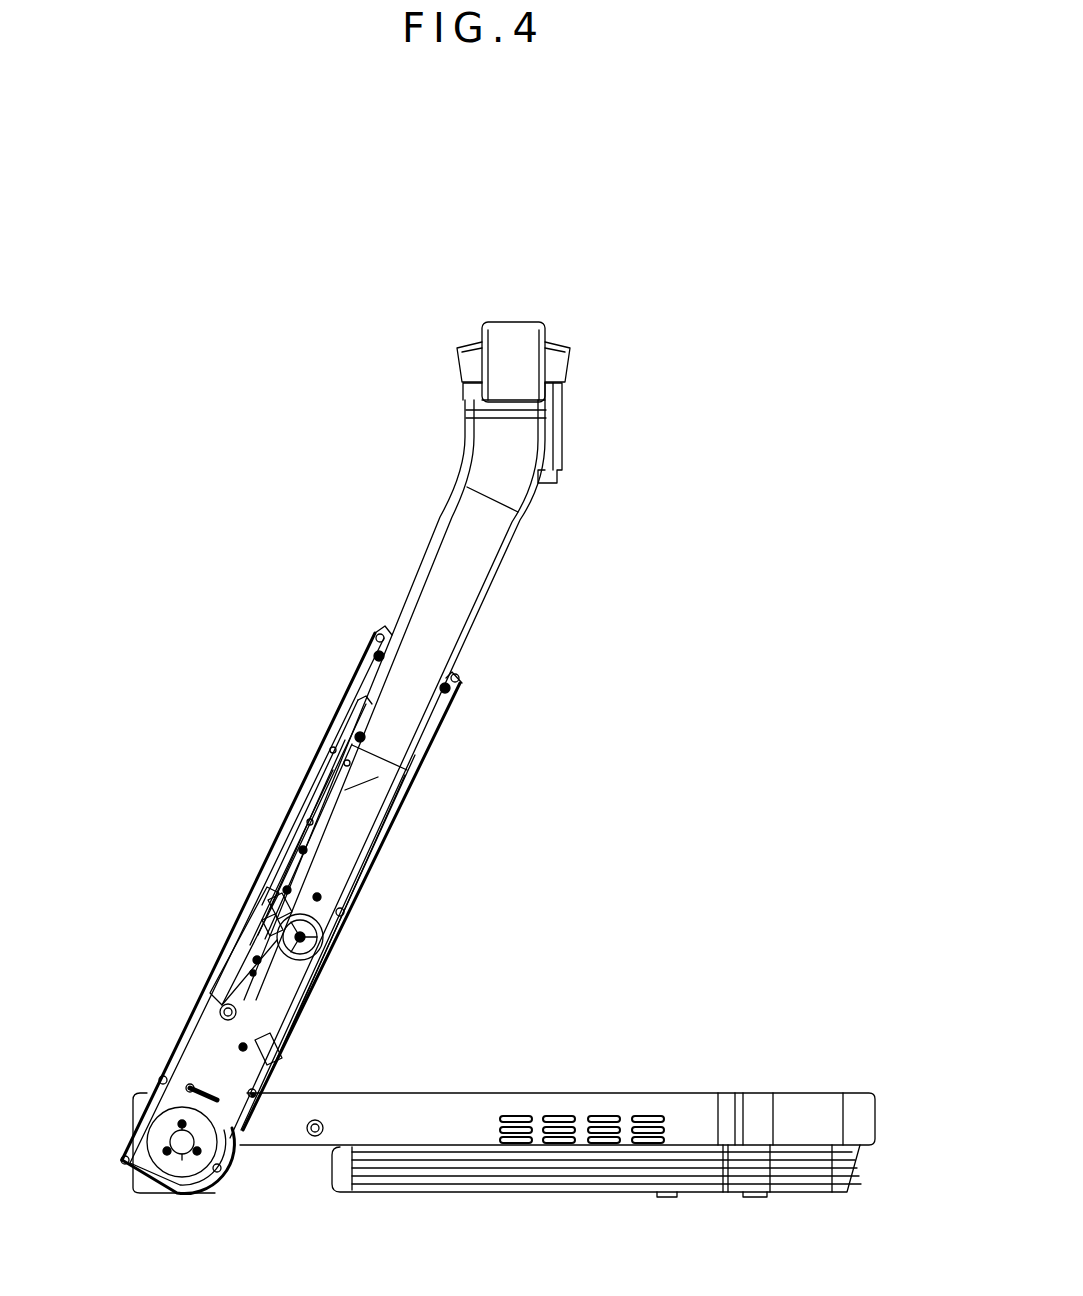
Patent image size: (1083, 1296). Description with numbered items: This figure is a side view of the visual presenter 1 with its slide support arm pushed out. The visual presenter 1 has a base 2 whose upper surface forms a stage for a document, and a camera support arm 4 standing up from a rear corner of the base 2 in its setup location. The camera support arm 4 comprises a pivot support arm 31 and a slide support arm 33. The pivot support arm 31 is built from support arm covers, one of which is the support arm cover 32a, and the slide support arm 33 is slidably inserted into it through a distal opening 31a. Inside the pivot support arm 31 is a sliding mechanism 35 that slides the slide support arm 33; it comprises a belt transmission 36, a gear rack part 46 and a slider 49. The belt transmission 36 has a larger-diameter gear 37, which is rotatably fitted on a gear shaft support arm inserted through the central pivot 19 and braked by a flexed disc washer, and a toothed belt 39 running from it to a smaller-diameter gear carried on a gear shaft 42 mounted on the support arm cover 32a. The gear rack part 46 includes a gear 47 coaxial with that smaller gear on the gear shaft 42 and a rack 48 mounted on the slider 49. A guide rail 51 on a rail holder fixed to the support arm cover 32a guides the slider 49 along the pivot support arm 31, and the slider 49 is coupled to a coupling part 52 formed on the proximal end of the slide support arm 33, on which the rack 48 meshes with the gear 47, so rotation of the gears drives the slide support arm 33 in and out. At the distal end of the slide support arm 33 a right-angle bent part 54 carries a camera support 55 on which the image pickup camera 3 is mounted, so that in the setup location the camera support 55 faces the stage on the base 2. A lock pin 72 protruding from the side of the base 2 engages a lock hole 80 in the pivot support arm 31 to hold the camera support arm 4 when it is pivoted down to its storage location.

The visual presenter 1 is at (673, 540).
The base 2 is at (470, 1092).
The image pickup camera 3 is at (555, 430).
The camera support arm 4 is at (512, 585).
The central pivot 19 is at (170, 1142).
The pivot support arm 31 is at (462, 697).
The distal opening 31a is at (388, 632).
The support arm cover 32a is at (376, 858).
The slide support arm 33 is at (445, 572).
The sliding mechanism 35 is at (345, 865).
The belt transmission 36 is at (178, 1073).
The larger-diameter gear 37 is at (160, 1125).
The toothed belt 39 is at (205, 1052).
The gear shaft 42 is at (310, 938).
The gear rack part 46 is at (265, 941).
The gear 47 is at (275, 940).
The rack 48 is at (265, 935).
The slider 49 is at (350, 720).
The guide rail 51 is at (305, 810).
The coupling part 52 is at (300, 865).
The right-angle bent part 54 is at (505, 339).
The camera support 55 is at (560, 363).
The lock pin 72 is at (318, 1120).
The lock hole 80 is at (220, 1010).